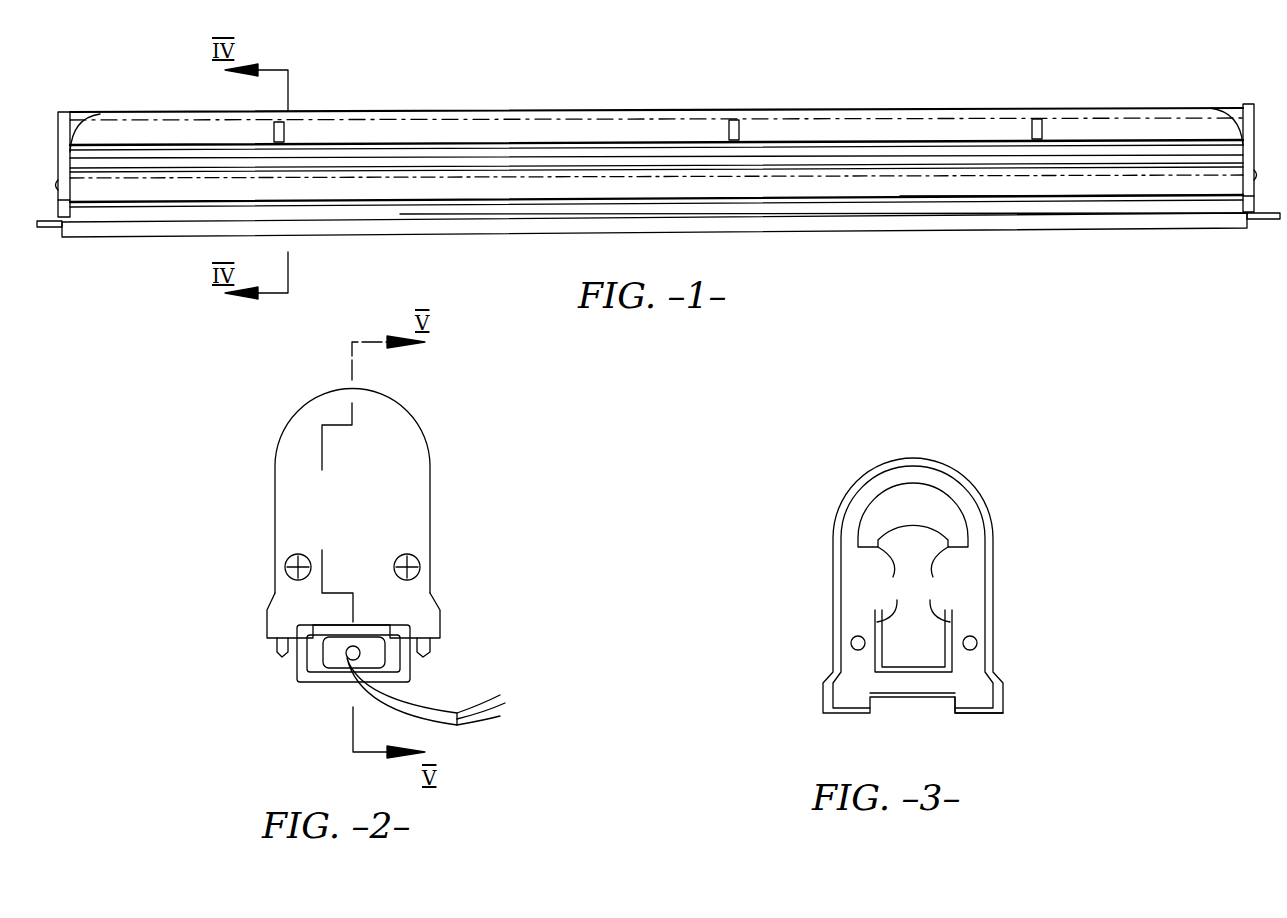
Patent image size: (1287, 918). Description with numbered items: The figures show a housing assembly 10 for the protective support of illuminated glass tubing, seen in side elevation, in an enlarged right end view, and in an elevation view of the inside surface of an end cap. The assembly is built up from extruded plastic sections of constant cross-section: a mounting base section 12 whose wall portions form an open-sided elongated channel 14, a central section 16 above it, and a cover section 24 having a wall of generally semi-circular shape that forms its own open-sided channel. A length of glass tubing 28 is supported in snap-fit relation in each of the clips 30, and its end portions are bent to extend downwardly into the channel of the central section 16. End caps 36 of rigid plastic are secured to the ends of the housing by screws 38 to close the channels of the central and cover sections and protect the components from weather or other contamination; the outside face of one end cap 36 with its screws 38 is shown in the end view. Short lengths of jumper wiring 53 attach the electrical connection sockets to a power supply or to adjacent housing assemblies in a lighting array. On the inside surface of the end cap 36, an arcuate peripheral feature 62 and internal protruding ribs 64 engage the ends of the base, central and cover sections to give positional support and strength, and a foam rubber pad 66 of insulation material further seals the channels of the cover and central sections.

In FIG. 1, the housing assembly 10 is at (870, 90).
In FIG. 2, the housing assembly 10 is at (455, 448).
In FIG. 1, the mounting base section 12 is at (135, 235).
In FIG. 2, the mounting base section 12 is at (325, 683).
In FIG. 1, the open-sided elongated channel 14 is at (1130, 230).
In FIG. 1, the central section 16 is at (1020, 190).
In FIG. 1, the cover section 24 is at (935, 107).
In FIG. 1, the glass tubing 28 is at (98, 118).
In FIG. 1, the clips 30 is at (285, 125).
In FIG. 1, the end caps 36 is at (62, 110).
In FIG. 2, the end caps 36 is at (410, 505).
In FIG. 3, the end caps 36 is at (993, 565).
In FIG. 1, the screws 38 is at (56, 185).
In FIG. 2, the screws 38 is at (290, 556).
In FIG. 1, the jumper wiring 53 is at (45, 230).
In FIG. 3, the arcuate retainer 62 is at (950, 470).
In FIG. 3, the internal protruding ribs 64 is at (913, 584).
In FIG. 3, the foam rubber pad 66 is at (973, 700).